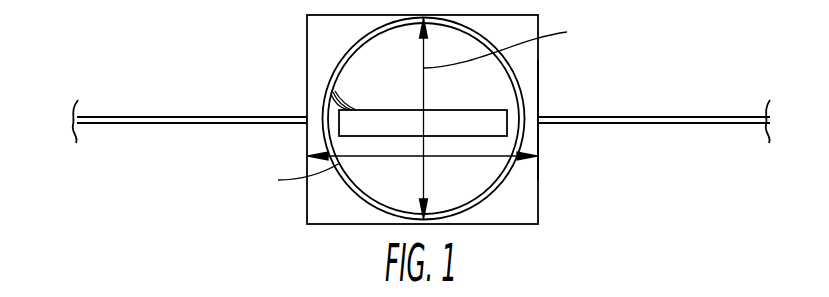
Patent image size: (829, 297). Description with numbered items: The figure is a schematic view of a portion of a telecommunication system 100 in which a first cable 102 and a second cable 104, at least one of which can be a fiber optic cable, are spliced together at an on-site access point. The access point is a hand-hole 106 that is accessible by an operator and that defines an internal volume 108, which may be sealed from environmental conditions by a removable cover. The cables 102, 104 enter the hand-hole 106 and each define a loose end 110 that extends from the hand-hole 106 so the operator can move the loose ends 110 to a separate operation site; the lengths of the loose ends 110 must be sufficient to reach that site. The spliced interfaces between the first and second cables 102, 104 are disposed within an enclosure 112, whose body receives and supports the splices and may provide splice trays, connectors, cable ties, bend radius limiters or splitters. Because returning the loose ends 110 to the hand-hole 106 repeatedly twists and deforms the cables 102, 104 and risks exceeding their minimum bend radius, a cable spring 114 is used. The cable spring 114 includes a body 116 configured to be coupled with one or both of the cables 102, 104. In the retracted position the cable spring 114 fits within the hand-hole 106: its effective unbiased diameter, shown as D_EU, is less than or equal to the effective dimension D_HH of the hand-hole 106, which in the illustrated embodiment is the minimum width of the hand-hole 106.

The telecommunication system 100 is at (178, 72).
The first cable 102 is at (177, 124).
The second cable 104 is at (673, 124).
The hand-hole 106 is at (539, 100).
The internal volume 108 is at (322, 200).
The loose end 110 is at (333, 99).
The enclosure 112 is at (502, 128).
The cable spring 114 is at (337, 63).
The body 116 is at (507, 170).